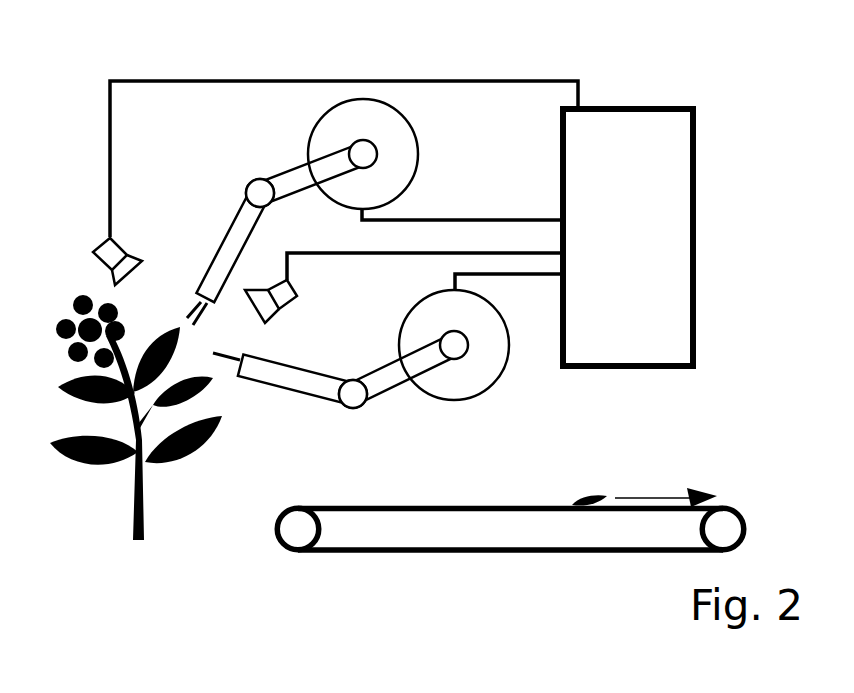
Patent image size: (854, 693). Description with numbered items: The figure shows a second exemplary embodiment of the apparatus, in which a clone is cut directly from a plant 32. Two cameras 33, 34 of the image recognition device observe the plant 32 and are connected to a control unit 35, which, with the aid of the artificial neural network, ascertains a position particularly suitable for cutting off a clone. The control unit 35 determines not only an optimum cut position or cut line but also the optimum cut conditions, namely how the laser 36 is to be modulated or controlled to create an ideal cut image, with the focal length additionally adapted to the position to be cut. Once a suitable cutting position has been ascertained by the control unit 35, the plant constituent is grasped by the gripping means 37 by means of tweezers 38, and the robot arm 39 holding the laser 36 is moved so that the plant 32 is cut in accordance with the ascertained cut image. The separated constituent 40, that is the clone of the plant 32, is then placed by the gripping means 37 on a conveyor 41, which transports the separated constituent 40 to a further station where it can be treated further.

The plant 32 is at (85, 468).
The camera 33 is at (96, 243).
The camera 34 is at (297, 295).
The control unit 35 is at (650, 105).
The laser 36 is at (231, 364).
The gripping means 37 is at (285, 167).
The tweezers 38 is at (187, 317).
The robot arm 39 is at (390, 387).
The constituent 40 is at (592, 500).
The conveyor 41 is at (330, 553).